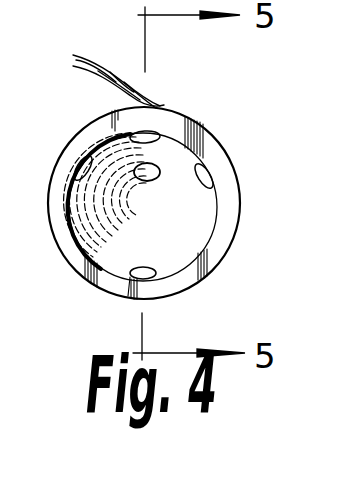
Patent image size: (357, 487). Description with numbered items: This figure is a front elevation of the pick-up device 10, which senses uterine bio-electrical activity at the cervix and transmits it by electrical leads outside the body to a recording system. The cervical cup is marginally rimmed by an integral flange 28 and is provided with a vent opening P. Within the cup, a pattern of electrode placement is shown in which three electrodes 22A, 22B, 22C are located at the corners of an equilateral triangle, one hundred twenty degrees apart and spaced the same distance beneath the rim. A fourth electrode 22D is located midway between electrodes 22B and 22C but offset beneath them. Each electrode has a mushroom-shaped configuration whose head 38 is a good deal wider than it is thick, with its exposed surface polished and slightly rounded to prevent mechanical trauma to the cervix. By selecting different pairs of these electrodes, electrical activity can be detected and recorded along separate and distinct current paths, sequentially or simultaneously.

The pick-up device 10 is at (148, 170).
The electrode 22A is at (156, 270).
The electrode 22B is at (80, 160).
The electrode 22C is at (208, 172).
The fourth electrode 22D is at (150, 134).
The flange 28 is at (54, 243).
The head 38 is at (141, 280).
The vent opening P is at (158, 175).